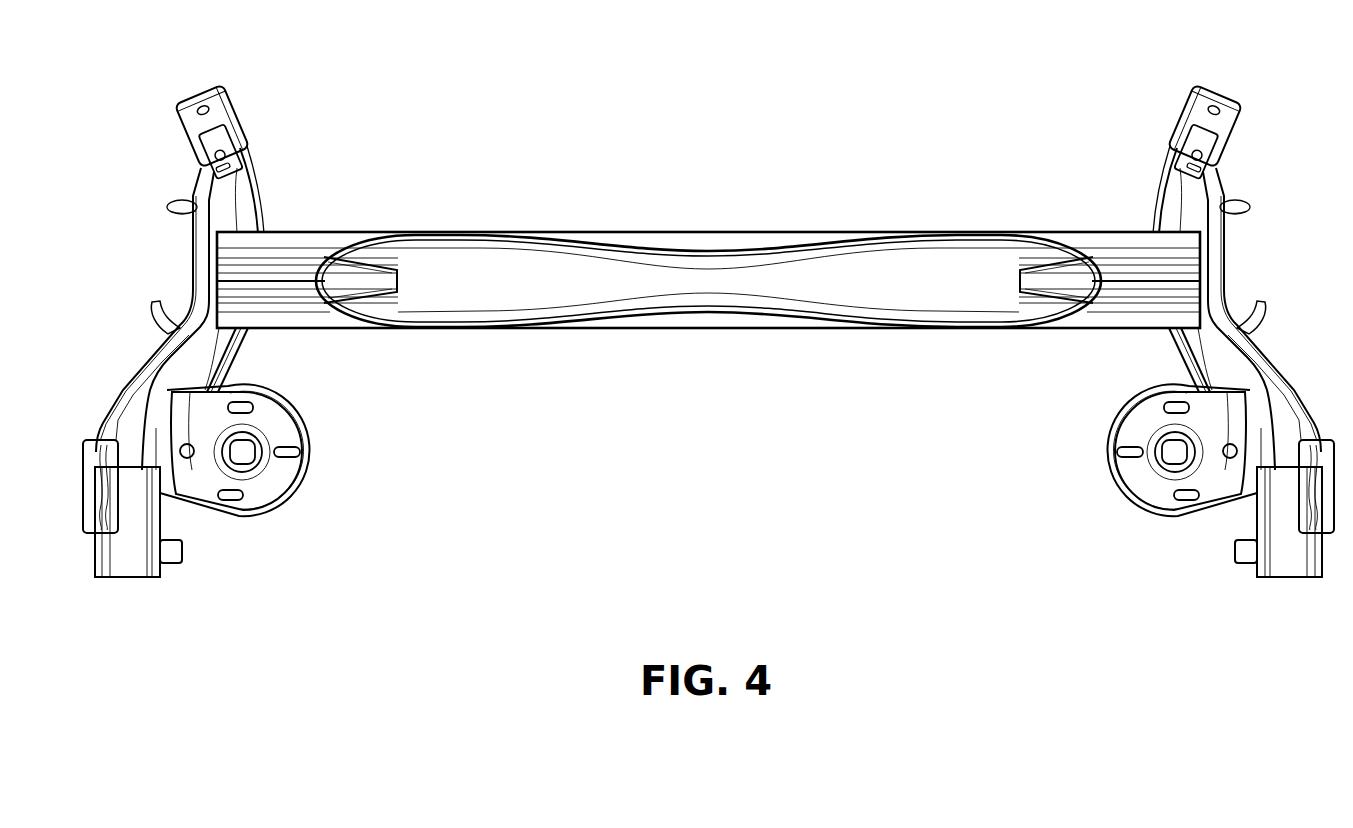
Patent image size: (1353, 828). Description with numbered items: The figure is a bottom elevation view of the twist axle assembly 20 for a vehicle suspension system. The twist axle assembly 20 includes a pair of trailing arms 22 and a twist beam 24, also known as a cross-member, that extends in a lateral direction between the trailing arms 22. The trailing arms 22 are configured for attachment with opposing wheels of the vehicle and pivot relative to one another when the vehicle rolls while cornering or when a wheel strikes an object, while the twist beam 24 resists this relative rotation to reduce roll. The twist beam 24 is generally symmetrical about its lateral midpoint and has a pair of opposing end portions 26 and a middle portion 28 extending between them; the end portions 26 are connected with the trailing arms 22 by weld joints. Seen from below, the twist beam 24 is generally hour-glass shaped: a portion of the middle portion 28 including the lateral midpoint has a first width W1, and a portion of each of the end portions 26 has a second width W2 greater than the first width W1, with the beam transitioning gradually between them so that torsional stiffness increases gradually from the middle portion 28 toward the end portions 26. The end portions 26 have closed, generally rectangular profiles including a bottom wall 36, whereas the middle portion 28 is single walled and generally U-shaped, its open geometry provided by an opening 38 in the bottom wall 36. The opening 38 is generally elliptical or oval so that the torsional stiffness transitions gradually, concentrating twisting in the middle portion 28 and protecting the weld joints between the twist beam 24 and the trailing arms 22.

The twist axle assembly 20 is at (724, 140).
The trailing arms 22 is at (225, 118).
The twist beam 24 is at (630, 222).
The end portions 26 is at (322, 228).
The middle portion 28 is at (746, 246).
The bottom wall 36 is at (291, 309).
The opening 38 is at (440, 320).
The first width W1 is at (708, 205).
The second width W2 is at (1050, 195).